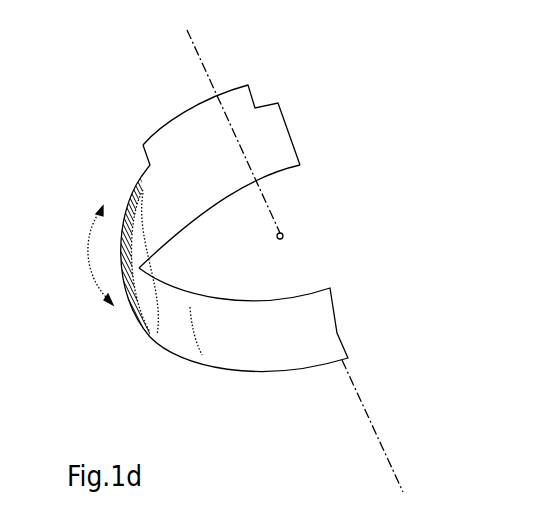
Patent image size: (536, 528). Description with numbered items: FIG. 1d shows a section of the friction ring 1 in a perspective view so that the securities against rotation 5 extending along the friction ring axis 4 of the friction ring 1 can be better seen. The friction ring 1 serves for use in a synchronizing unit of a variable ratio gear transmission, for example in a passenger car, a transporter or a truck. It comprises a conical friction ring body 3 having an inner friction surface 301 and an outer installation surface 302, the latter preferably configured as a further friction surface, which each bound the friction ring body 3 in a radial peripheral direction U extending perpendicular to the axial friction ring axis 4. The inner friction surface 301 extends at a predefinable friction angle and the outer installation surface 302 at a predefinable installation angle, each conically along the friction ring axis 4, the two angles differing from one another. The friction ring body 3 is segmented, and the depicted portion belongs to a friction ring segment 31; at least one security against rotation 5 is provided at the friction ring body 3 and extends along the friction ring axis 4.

The friction ring 1 is at (385, 97).
The friction ring body 3 is at (233, 261).
The friction ring axis 4 is at (380, 438).
The security against rotation 5 is at (175, 128).
The inner friction surface 301 is at (160, 215).
The outer installation surface 302 is at (227, 345).
The friction ring segment 31 is at (162, 330).
The radial peripheral direction U is at (86, 253).